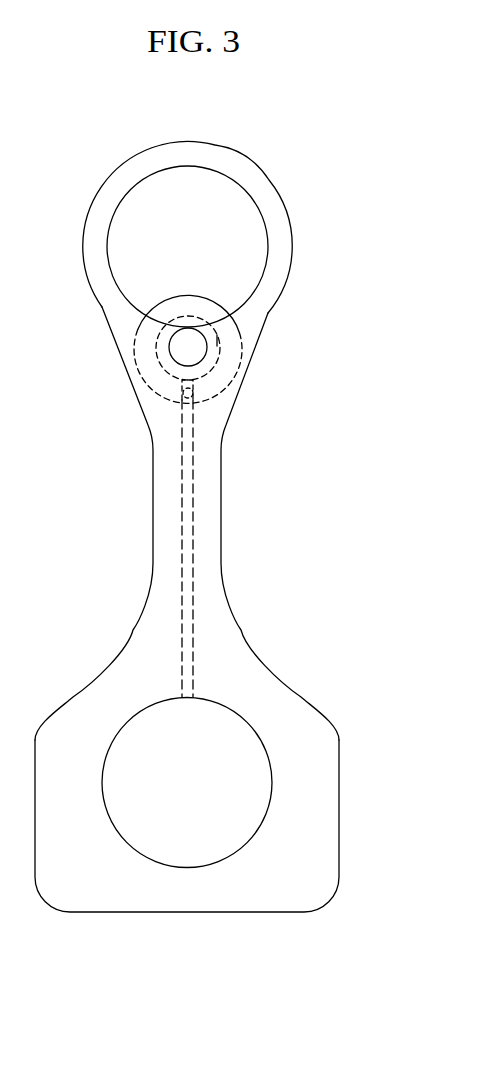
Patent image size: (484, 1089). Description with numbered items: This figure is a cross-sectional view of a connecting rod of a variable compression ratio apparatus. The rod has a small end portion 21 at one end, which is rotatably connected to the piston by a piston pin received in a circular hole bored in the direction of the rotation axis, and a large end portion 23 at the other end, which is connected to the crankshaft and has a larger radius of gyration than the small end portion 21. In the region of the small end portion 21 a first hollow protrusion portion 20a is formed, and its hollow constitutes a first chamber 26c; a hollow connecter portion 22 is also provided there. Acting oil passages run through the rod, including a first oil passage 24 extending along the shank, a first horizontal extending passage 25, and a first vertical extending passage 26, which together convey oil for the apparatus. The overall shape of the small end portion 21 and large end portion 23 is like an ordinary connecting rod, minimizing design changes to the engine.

The first hollow protrusion portion 20a is at (205, 302).
The small end portion 21 is at (288, 238).
The hollow connecter portion 22 is at (172, 348).
The large end portion 23 is at (328, 778).
The first oil passage 24 is at (187, 517).
The first horizontal extending passage 25 is at (229, 411).
The first vertical extending passage 26 is at (181, 386).
The first chamber 26c is at (222, 342).